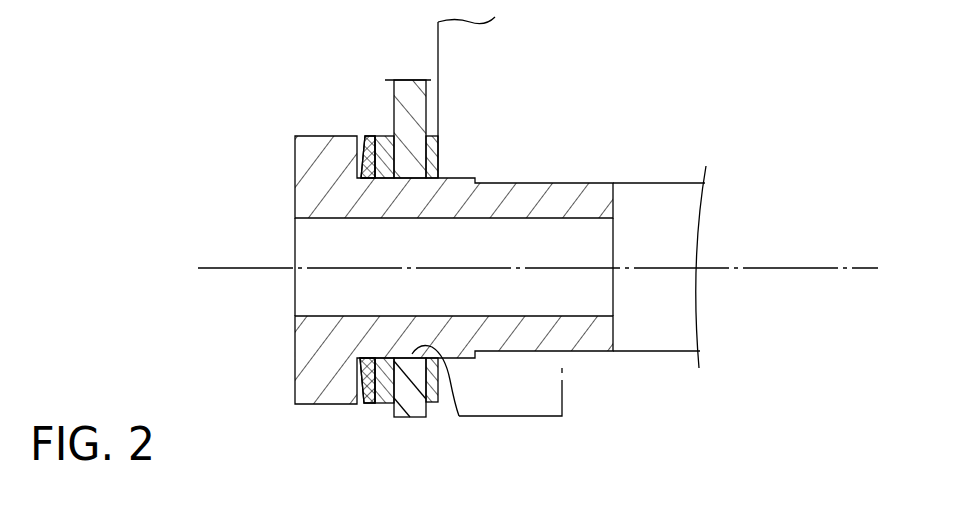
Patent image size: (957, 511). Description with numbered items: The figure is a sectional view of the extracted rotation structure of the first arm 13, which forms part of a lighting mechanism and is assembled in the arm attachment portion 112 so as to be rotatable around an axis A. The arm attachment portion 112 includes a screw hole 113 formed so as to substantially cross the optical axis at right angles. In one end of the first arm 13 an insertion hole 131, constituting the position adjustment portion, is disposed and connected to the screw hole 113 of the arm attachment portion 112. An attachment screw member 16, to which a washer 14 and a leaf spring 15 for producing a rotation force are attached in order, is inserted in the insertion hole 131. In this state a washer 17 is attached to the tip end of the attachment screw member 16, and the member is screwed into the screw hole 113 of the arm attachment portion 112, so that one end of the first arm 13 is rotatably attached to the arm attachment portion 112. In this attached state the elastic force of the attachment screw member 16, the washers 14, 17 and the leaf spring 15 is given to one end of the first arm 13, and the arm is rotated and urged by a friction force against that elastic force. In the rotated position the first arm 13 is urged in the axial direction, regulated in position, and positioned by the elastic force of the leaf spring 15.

The attachment screw member 16 is at (295, 180).
The leaf spring 15 is at (366, 135).
The washer 14 is at (390, 134).
The washer 17 is at (437, 128).
The first arm 13 is at (411, 403).
The insertion hole 131 is at (459, 413).
The arm attachment portion 112 is at (533, 418).
The screw hole 113 is at (675, 351).
The axis A is at (792, 266).